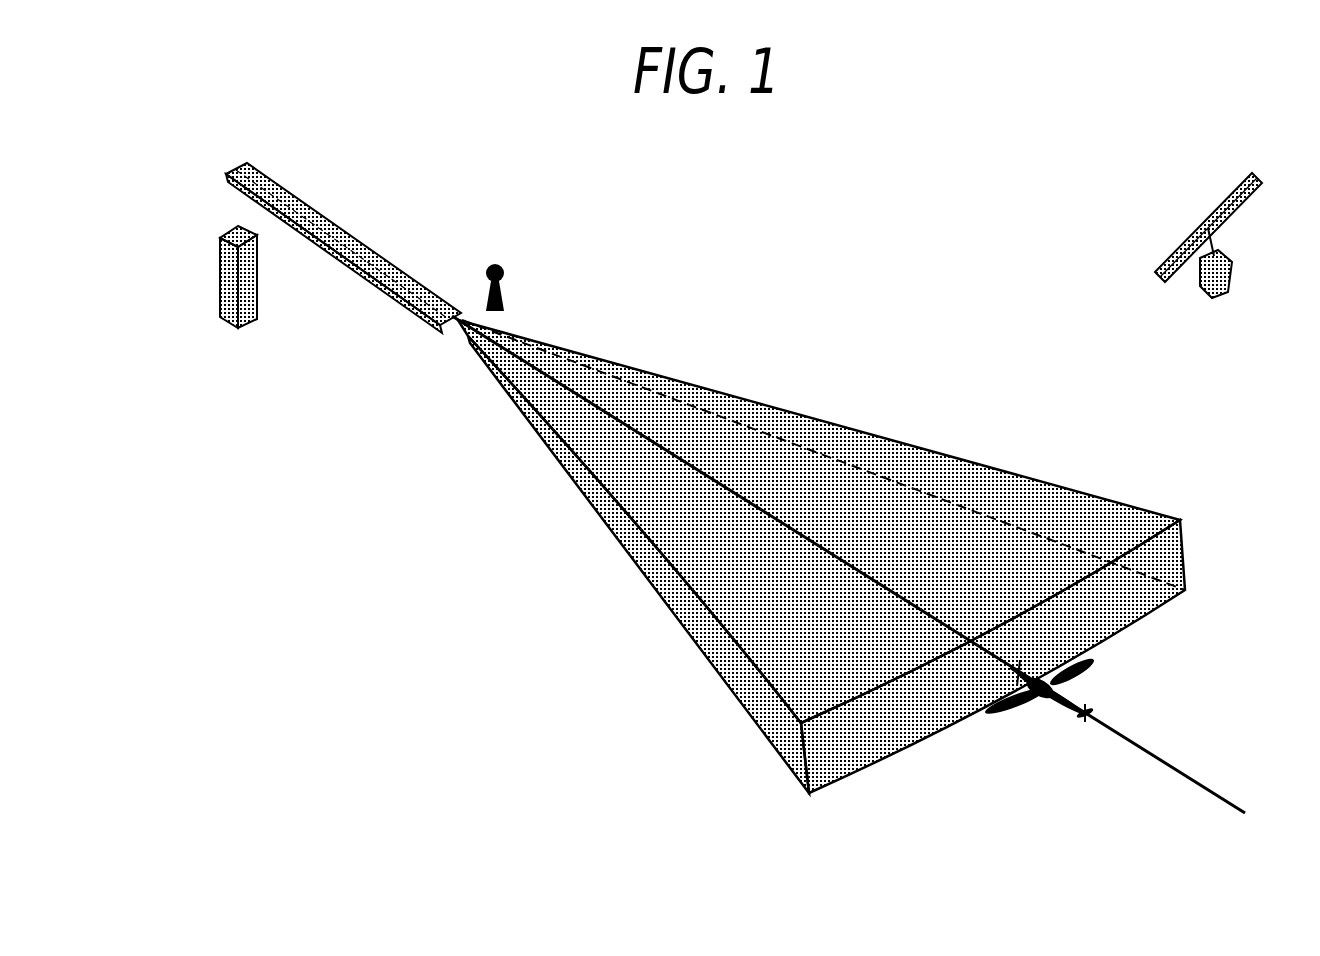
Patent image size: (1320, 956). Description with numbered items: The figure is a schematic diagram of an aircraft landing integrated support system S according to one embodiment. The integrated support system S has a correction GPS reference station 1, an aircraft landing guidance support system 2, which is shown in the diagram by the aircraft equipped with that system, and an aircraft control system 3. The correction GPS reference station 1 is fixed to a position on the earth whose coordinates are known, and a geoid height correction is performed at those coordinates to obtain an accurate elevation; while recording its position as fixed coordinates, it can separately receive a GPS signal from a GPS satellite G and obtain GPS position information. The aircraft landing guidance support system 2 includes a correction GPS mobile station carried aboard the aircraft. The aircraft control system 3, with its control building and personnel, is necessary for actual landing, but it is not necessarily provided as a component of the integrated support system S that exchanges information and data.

The correction GPS reference station 1 is at (507, 302).
The aircraft landing guidance support system 2 is at (1092, 712).
The aircraft control system 3 is at (228, 272).
The aircraft landing integrated support system S is at (466, 490).
The GPS satellite G is at (1192, 237).